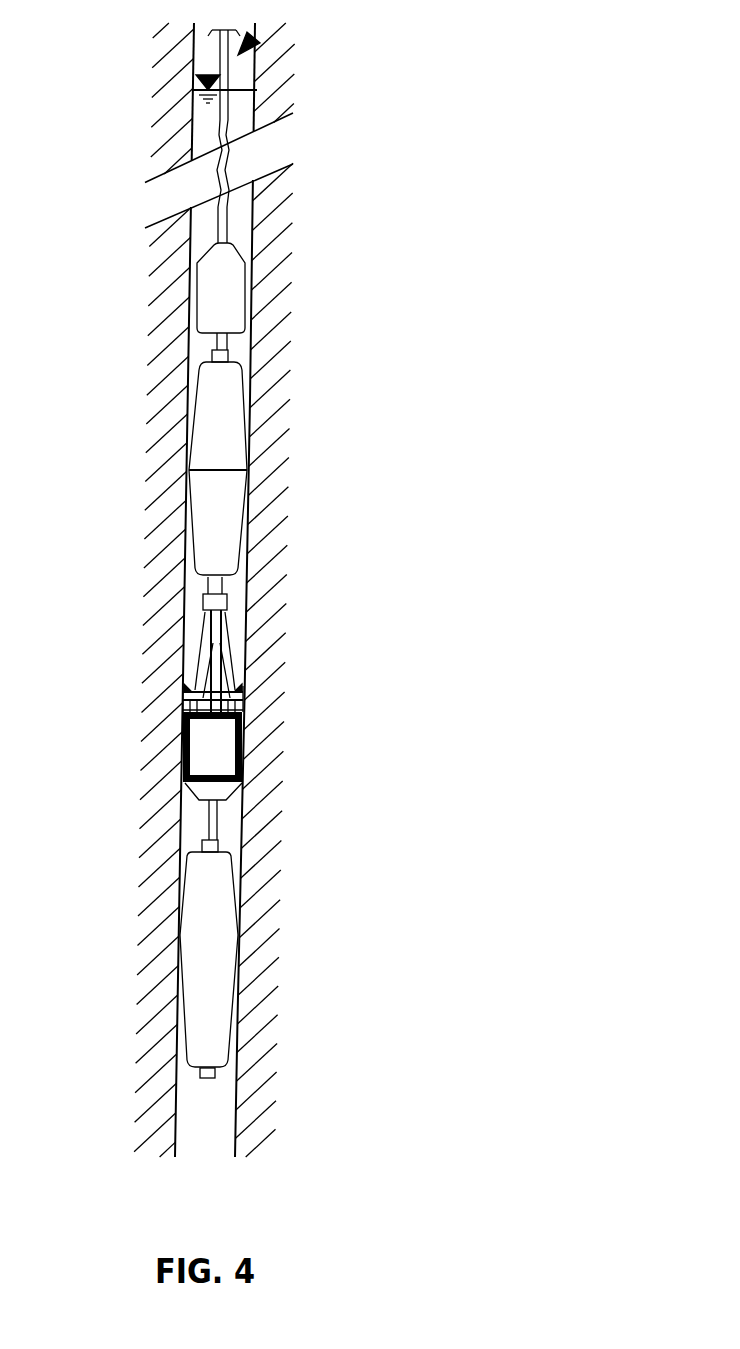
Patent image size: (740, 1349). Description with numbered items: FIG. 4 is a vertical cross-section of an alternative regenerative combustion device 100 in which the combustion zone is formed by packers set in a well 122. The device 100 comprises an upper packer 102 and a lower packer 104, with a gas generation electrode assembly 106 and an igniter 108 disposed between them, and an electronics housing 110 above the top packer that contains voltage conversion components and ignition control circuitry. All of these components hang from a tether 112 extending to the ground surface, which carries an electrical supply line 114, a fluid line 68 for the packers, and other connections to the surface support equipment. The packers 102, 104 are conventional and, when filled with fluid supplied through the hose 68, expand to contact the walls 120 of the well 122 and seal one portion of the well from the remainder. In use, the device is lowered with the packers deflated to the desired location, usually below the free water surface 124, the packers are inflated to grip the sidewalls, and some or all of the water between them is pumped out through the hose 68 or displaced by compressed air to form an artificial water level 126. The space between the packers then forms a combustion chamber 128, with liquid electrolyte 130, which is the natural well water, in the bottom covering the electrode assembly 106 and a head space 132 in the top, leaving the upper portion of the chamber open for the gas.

The fluid line 68 is at (155, 91).
The regenerative combustion device 100 is at (269, 659).
The upper packer 102 is at (279, 461).
The lower packer 104 is at (277, 965).
The gas generation electrode assembly 106 is at (157, 772).
The igniter 108 is at (146, 582).
The electronics housing 110 is at (167, 295).
The tether 112 is at (312, 124).
The electrical supply line 114 is at (170, 118).
The walls 120 is at (219, 590).
The well 122 is at (171, 609).
The free water surface 124 is at (306, 88).
The artificial water level 126 is at (268, 680).
The combustion chamber 128 is at (125, 653).
The liquid electrolyte 130 is at (279, 814).
The head space 132 is at (309, 577).